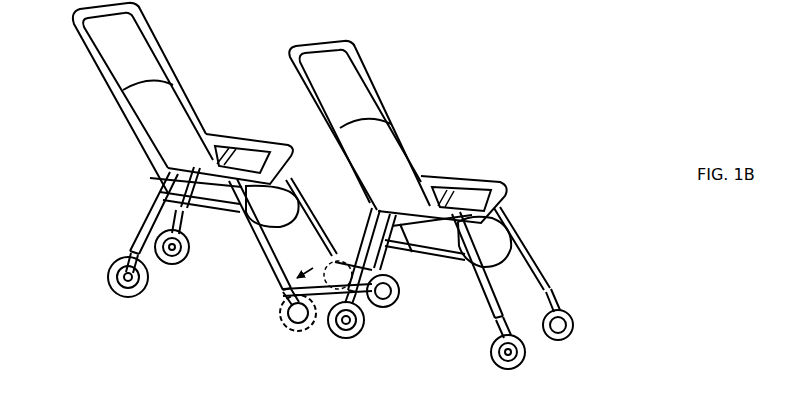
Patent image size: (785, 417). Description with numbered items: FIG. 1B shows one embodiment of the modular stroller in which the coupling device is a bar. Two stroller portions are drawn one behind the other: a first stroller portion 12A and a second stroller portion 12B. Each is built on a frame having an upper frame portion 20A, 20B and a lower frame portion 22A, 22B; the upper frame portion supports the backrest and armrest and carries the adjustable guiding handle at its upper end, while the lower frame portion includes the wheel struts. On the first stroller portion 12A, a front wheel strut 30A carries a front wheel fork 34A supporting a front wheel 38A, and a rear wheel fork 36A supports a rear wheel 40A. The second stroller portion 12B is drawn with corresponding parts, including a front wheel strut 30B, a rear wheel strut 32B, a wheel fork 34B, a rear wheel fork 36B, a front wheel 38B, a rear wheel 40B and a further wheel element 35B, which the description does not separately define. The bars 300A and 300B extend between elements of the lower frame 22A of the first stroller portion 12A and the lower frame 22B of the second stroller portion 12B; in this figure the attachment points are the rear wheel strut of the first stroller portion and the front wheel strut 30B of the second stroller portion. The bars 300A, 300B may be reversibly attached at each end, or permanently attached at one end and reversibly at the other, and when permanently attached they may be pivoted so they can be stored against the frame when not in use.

The second stroller portion 12B is at (207, 44).
The first stroller portion 12A is at (428, 84).
The upper frame portion 20B is at (100, 89).
The upper frame portion 20A is at (396, 113).
The lower frame portion 22B is at (222, 222).
The lower frame portion 22A is at (438, 260).
The front wheel strut 30B is at (266, 268).
The front wheel strut 30A is at (484, 305).
The front leg of second stroller 32B is at (142, 213).
The connecting bar of second stroller 34B is at (283, 297).
The front wheel fork 34A is at (495, 324).
The rear wheel of second stroller 35B is at (279, 327).
The front wheel of second stroller 36B is at (124, 253).
The rear wheel fork 36A is at (366, 282).
The rear wheel of second stroller 38B is at (374, 284).
The front wheel 38A is at (496, 373).
The wheel hub of second stroller 40B is at (117, 302).
The rear wheel 40A is at (360, 336).
The bar 300B is at (362, 252).
The bar 300A is at (333, 325).